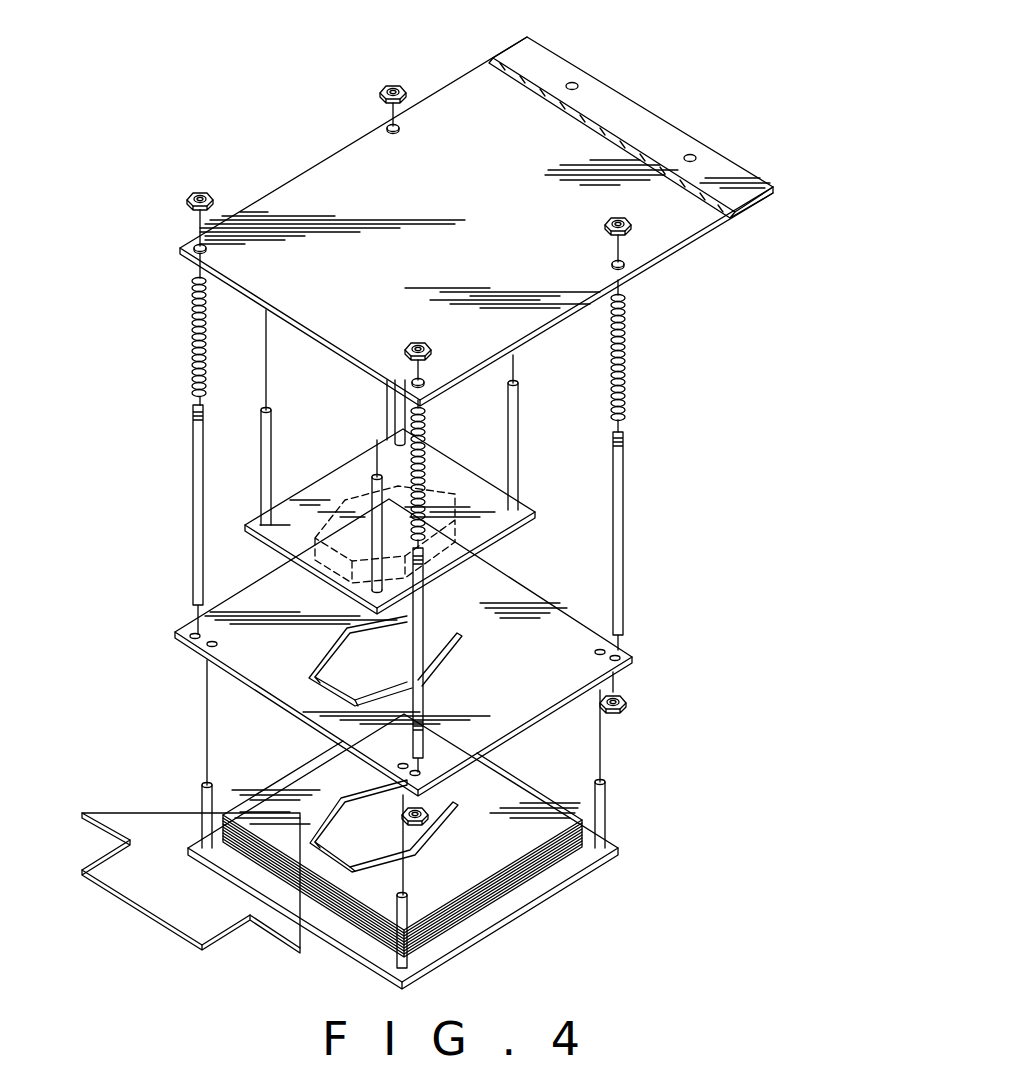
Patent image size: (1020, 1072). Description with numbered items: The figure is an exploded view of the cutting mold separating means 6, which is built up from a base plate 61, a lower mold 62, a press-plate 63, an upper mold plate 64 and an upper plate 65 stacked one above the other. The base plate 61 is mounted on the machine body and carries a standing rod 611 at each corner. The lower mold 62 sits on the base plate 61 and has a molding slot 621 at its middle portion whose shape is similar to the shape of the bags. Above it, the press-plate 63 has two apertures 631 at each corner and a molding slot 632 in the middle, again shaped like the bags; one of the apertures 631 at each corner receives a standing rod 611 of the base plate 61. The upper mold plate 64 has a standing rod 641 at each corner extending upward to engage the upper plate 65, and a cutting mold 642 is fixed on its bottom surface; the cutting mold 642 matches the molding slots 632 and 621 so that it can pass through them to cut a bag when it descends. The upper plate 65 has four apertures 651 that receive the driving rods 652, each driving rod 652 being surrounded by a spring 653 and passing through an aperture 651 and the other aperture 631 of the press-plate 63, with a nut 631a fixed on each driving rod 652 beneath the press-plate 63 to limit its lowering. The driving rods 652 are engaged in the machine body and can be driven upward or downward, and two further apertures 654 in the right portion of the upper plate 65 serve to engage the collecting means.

The cutting mold separating means 6 is at (178, 364).
The base plate 61 is at (560, 872).
The standing rod 611 is at (203, 795).
The lower mold 62 is at (480, 860).
The molding slot 621 is at (340, 805).
The press-plate 63 is at (565, 618).
The apertures 631 is at (626, 655).
The nut 631a is at (628, 708).
The molding slot 632 is at (440, 628).
The upper mold plate 64 is at (455, 470).
The standing rod 641 is at (272, 460).
The cutting mold 642 is at (470, 546).
The upper plate 65 is at (302, 180).
The apertures 651 is at (388, 128).
The driving rod 652 is at (190, 495).
The spring 653 is at (625, 378).
The apertures 654 is at (575, 82).